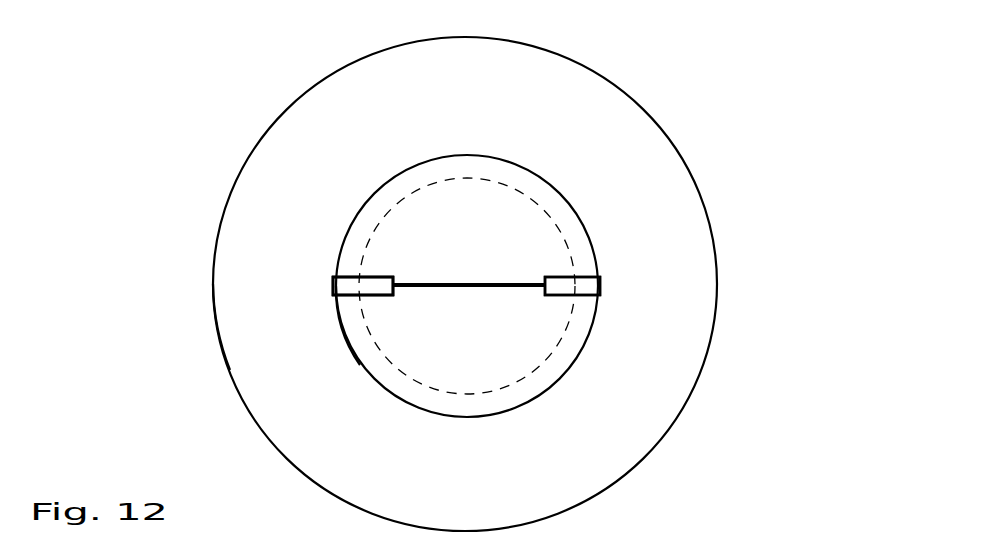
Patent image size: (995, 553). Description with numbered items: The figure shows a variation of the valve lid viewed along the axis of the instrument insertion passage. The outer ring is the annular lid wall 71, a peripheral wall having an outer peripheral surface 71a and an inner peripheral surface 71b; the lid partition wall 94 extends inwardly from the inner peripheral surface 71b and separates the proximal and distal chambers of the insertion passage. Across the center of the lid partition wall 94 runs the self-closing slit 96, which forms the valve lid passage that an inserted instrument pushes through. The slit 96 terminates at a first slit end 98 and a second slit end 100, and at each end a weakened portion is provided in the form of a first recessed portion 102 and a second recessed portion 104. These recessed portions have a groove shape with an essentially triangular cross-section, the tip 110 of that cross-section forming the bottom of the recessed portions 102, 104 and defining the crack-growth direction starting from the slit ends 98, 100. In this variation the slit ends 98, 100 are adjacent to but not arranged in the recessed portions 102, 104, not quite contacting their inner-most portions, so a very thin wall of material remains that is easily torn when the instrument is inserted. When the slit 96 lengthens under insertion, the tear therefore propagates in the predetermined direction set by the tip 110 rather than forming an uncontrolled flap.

The annular lid wall 71 is at (248, 297).
The outer peripheral surface 71a is at (227, 360).
The inner peripheral surface 71b is at (343, 340).
The lid partition wall 94 is at (415, 352).
The self-closing slit 96 is at (453, 278).
The first slit end 98 is at (397, 285).
The second slit end 100 is at (553, 258).
The first recessed portion 102 is at (352, 280).
The second recessed portion 104 is at (588, 238).
The tip of the triangular cross-section 110 is at (333, 275).